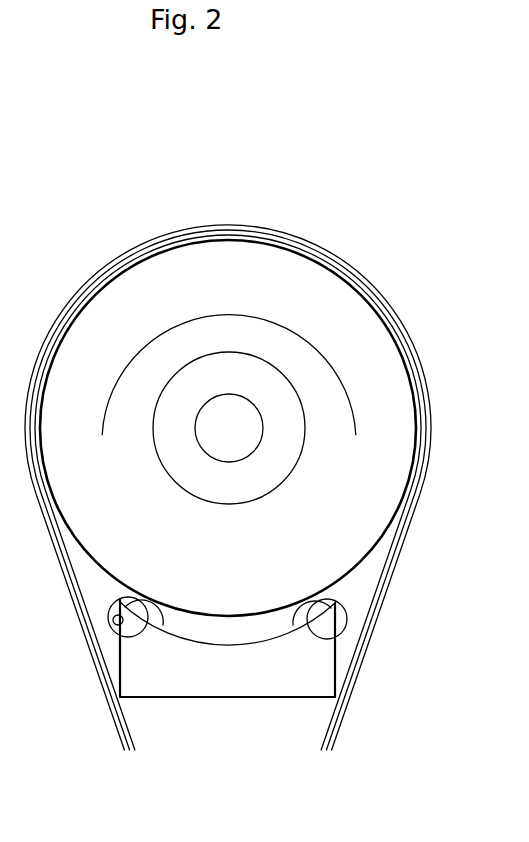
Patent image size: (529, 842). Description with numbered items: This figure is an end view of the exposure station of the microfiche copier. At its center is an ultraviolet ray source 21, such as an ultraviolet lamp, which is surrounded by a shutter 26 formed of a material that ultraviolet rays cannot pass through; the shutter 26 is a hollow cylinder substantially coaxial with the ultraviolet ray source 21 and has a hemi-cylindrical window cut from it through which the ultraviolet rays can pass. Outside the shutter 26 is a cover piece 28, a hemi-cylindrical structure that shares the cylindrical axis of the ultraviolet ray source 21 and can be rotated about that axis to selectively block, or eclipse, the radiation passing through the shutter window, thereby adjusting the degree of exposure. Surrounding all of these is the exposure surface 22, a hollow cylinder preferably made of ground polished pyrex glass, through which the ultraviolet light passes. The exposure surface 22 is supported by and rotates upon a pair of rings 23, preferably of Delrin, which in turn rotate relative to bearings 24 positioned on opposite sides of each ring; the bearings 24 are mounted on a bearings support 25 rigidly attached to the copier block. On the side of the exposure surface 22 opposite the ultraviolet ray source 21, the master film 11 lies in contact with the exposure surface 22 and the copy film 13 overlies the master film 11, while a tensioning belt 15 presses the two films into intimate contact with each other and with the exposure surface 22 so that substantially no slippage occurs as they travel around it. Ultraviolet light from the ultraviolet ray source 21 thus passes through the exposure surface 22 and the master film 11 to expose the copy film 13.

The ultraviolet ray source 21 is at (240, 393).
The shutter 26 is at (297, 397).
The cover piece 28 is at (350, 397).
The exposure surface 22 is at (417, 420).
The master film 11 is at (423, 447).
The copy film 13 is at (428, 475).
The tensioning belt 15 is at (420, 514).
The bearings 24 is at (118, 618).
The rings 23 is at (112, 626).
The bearings support 25 is at (208, 677).